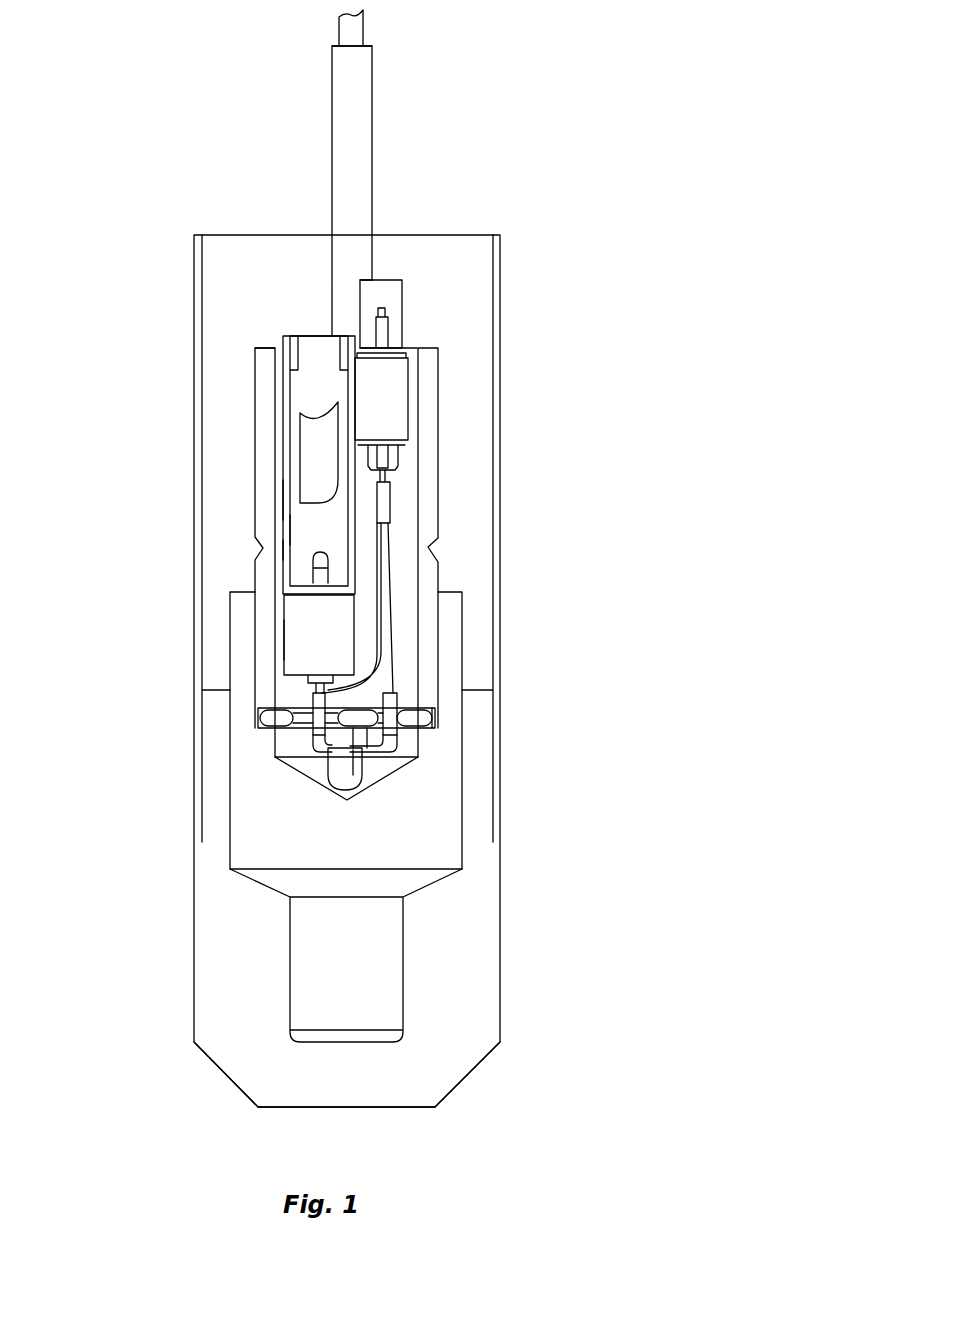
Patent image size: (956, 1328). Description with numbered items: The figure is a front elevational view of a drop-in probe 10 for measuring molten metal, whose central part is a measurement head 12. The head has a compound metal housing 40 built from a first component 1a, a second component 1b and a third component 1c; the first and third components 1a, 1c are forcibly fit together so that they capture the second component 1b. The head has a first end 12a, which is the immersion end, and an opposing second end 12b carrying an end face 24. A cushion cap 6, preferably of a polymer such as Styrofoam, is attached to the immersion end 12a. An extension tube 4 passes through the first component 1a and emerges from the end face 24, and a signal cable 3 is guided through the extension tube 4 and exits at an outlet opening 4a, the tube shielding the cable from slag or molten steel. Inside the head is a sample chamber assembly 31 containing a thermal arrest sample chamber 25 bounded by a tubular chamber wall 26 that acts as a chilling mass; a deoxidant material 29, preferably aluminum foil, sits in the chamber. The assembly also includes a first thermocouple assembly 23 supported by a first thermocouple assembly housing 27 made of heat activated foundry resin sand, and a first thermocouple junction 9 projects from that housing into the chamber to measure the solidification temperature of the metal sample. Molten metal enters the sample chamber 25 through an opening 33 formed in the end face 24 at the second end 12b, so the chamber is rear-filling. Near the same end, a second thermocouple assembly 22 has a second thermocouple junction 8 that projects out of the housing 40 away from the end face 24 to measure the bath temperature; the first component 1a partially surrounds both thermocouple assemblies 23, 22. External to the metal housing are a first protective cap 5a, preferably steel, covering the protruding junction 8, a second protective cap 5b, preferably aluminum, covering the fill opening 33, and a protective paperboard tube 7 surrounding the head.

The drop-in probe 10 is at (680, 162).
The protective paperboard tube 7 is at (502, 310).
The cushion cap 6 is at (500, 963).
The extension tube 4 is at (358, 128).
The outlet opening 4a is at (332, 46).
The signal cable 3 is at (352, 32).
The end face 24 is at (418, 348).
The second thermocouple junction 8 is at (385, 308).
The first protective cap 5a is at (388, 280).
The measurement head 12 is at (265, 368).
The second end 12b is at (264, 348).
The first end 12a is at (433, 883).
The compound metal housing 40 is at (438, 495).
The second protective cap 5b is at (293, 336).
The opening 33 is at (325, 338).
The deoxidant material 29 is at (315, 467).
The chamber wall 26 is at (282, 500).
The sample chamber 25 is at (300, 530).
The sample chamber assembly 31 is at (280, 548).
The second thermocouple assembly 22 is at (380, 404).
The first thermocouple junction 9 is at (327, 560).
The first component 1a is at (438, 577).
The first thermocouple assembly 23 is at (318, 632).
The first thermocouple assembly housing 27 is at (282, 638).
The second component 1b is at (437, 720).
The third component 1c is at (463, 820).